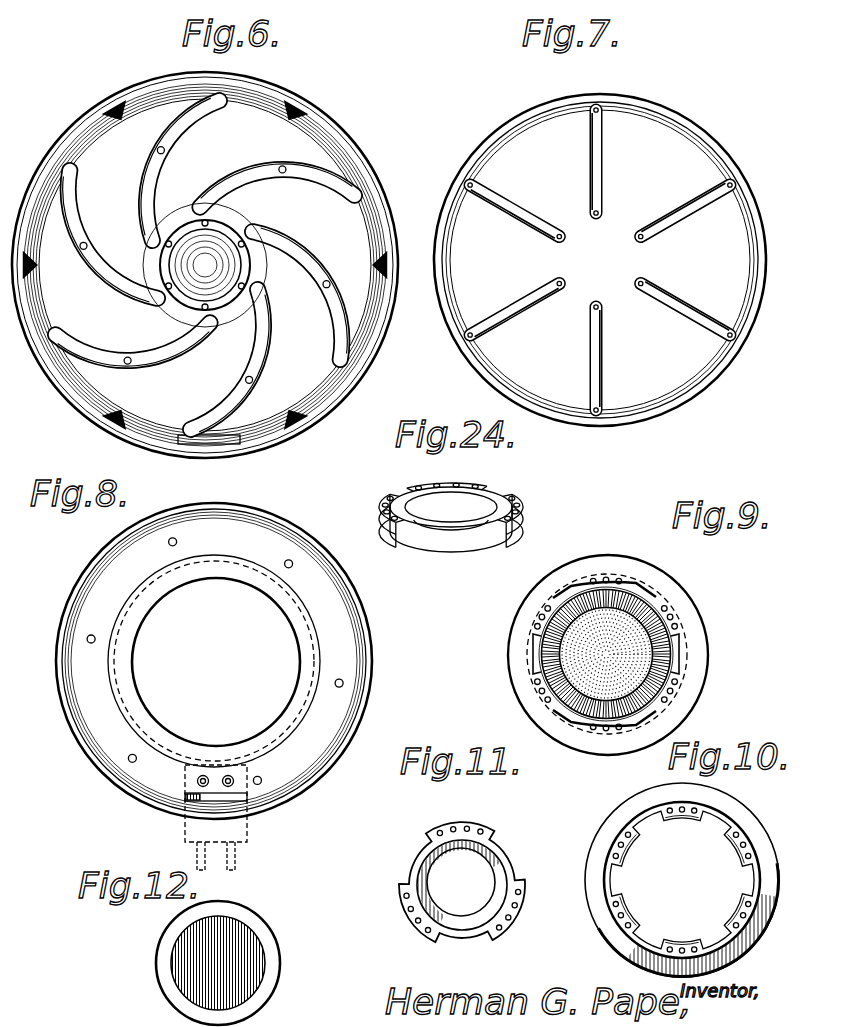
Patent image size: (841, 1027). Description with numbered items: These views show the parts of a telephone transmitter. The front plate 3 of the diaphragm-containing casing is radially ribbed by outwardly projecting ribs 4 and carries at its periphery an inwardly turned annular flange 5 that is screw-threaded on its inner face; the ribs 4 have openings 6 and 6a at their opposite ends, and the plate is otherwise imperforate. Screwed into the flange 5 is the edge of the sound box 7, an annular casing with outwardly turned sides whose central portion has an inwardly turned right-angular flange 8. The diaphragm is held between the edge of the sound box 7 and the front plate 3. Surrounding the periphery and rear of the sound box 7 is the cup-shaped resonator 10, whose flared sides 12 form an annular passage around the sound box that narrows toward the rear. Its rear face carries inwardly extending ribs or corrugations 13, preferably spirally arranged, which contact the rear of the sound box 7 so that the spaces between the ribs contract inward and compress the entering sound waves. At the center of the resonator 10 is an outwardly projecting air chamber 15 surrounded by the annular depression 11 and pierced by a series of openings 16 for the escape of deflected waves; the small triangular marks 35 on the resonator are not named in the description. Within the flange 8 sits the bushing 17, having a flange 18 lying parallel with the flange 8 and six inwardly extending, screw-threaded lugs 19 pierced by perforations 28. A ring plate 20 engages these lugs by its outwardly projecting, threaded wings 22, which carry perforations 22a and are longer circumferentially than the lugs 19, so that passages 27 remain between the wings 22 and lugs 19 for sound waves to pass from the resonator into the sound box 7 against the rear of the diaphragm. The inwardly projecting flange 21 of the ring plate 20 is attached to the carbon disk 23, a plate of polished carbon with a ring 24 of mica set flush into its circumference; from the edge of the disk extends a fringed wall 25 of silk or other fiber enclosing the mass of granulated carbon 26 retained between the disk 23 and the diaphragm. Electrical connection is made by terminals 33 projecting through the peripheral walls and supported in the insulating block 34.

In FIG. 7, the front plate 3 is at (600, 260).
In FIG. 7, the ribs 4 is at (541, 226).
In FIG. 7, the annular flange 5 is at (699, 134).
In FIG. 7, the openings 6 is at (560, 241).
In FIG. 7, the openings 6a is at (598, 110).
In FIG. 8, the sound box 7 is at (372, 656).
In FIG. 8, the right angular flange 8 is at (302, 712).
In FIG. 6, the resonator 10 is at (205, 265).
In FIG. 6, the annular corrugation 11 is at (250, 262).
In FIG. 6, the flared sides 12 is at (371, 351).
In FIG. 6, the ribs 13 is at (222, 405).
In FIG. 6, the air chamber 15 is at (205, 265).
In FIG. 6, the openings 16 is at (206, 226).
In FIG. 9, the bushing 17 is at (655, 595).
In FIG. 10, the bushing 17 is at (682, 880).
In FIG. 9, the flange 18 is at (690, 689).
In FIG. 10, the flange 18 is at (621, 815).
In FIG. 9, the lugs 19 is at (680, 630).
In FIG. 10, the lugs 19 is at (678, 822).
In FIG. 24, the ring plate 20 is at (451, 534).
In FIG. 11, the ring plate 20 is at (507, 860).
In FIG. 24, the flange 21 is at (483, 507).
In FIG. 11, the flange 21 is at (493, 859).
In FIG. 24, the wings 22 is at (410, 484).
In FIG. 11, the wings 22 is at (430, 836).
In FIG. 24, the perforations 22a is at (465, 480).
In FIG. 11, the perforations 22a is at (480, 831).
In FIG. 12, the carbon disk 23 is at (226, 935).
In FIG. 12, the ring of mica 24 is at (275, 964).
In FIG. 9, the fringed wall 25 is at (578, 712).
In FIG. 9, the granulated carbon 26 is at (640, 655).
In FIG. 9, the passages 27 is at (632, 584).
In FIG. 9, the perforations 28 is at (538, 619).
In FIG. 10, the perforations 28 is at (743, 912).
In FIG. 8, the terminals 33 is at (240, 854).
In FIG. 8, the insulating block 34 is at (248, 827).
In FIG. 6, the rim lugs 35 is at (118, 416).